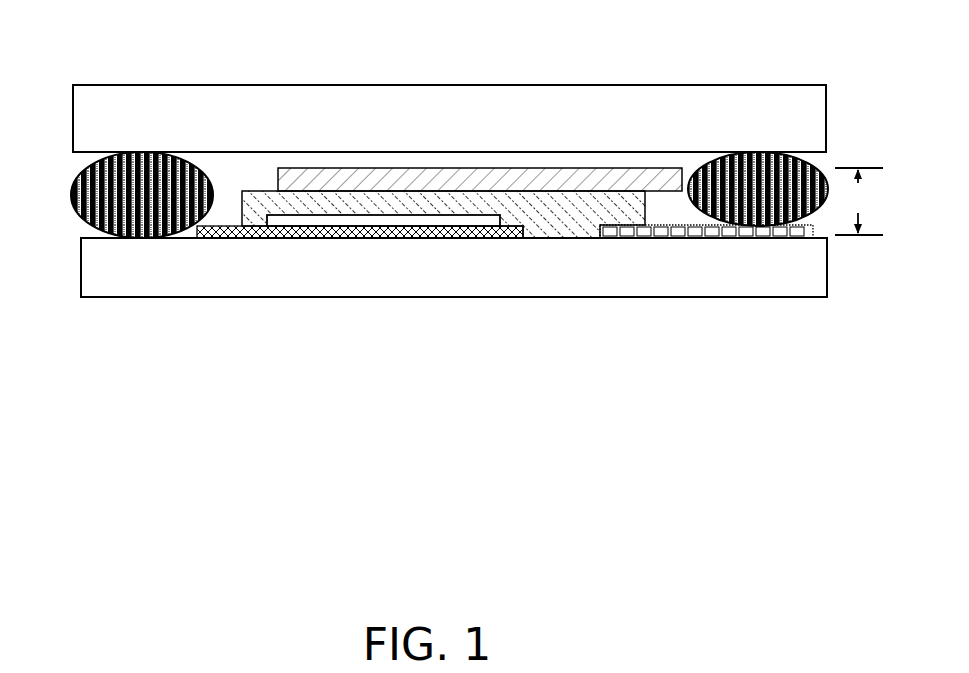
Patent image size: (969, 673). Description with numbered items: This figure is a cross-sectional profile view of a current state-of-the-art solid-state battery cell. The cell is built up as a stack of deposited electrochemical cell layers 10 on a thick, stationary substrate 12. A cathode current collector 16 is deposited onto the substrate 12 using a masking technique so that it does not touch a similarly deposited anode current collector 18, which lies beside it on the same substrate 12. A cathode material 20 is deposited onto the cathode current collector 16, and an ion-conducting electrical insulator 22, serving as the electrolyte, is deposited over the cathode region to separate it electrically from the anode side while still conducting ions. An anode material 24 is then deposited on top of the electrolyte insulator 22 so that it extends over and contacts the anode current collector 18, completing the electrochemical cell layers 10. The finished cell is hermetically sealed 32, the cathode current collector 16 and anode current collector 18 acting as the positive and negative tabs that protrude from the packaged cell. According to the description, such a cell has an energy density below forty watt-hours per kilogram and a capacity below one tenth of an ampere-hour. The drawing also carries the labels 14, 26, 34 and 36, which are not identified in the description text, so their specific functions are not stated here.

The electrochemical cell layers 10 is at (481, 181).
The substrate 12 is at (431, 274).
The substrate surface 14 is at (420, 229).
The cathode current collector 16 is at (208, 239).
The anode current collector 18 is at (690, 238).
The cathode material 20 is at (307, 227).
The ion-conducting electrical insulator 22 is at (570, 220).
The anode material 24 is at (505, 167).
The device thickness 26 is at (859, 201).
The hermetic seal 32 is at (366, 121).
The seal 34 is at (153, 206).
The gap 36 is at (304, 157).